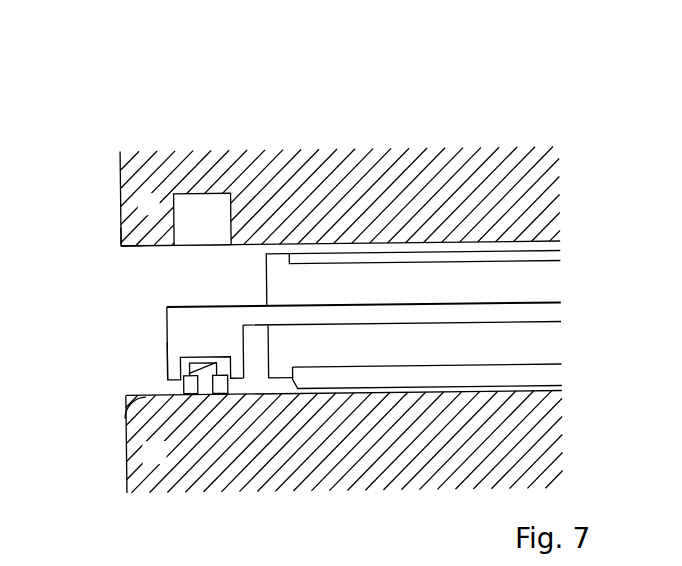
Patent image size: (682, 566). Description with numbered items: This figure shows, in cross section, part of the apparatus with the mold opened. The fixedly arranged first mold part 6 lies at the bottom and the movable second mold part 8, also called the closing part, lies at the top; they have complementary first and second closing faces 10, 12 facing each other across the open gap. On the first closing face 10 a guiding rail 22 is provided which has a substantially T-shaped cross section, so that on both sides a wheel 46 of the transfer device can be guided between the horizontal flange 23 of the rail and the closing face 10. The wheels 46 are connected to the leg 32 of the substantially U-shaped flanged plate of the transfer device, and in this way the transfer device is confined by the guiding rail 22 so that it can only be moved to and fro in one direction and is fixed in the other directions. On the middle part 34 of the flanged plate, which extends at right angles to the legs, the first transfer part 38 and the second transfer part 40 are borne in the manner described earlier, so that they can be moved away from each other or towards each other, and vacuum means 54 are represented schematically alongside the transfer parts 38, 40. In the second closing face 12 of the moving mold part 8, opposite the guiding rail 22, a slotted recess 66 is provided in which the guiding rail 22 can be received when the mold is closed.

The first mold part 6 is at (145, 460).
The second mold part 8 is at (158, 211).
The first closing face 10 is at (124, 423).
The second closing face 12 is at (142, 246).
The guiding rail 22 is at (183, 364).
The horizontal flange 23 is at (215, 360).
The leg 32 is at (188, 322).
The middle part 34 is at (223, 305).
The first transfer part 38 is at (422, 356).
The second transfer part 40 is at (422, 293).
The wheel 46 is at (183, 388).
The vacuum means 54 is at (542, 256).
The slotted recess 66 is at (190, 229).